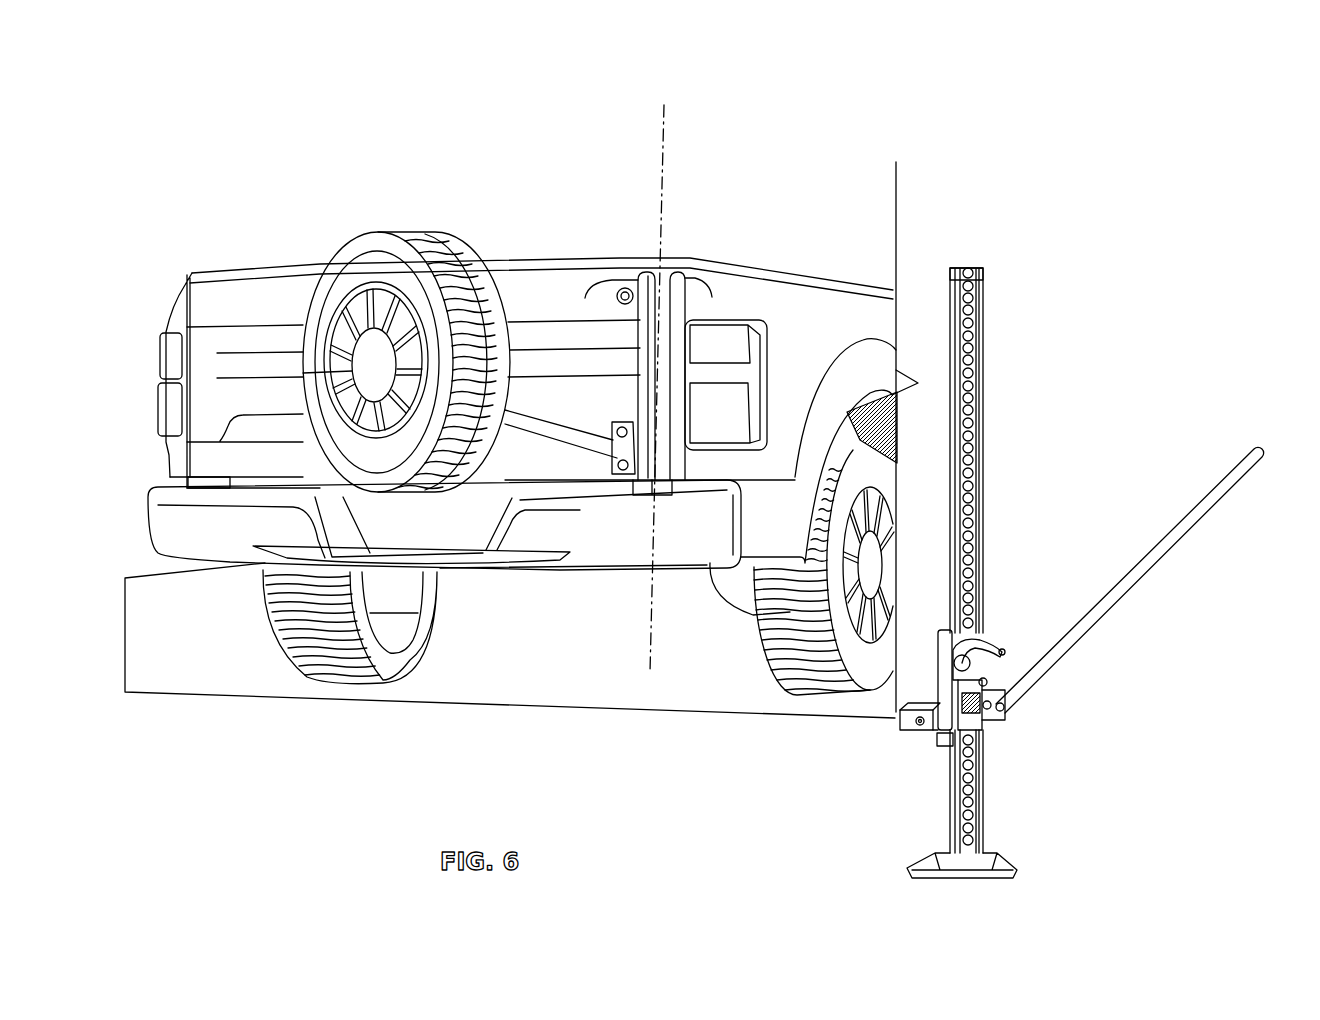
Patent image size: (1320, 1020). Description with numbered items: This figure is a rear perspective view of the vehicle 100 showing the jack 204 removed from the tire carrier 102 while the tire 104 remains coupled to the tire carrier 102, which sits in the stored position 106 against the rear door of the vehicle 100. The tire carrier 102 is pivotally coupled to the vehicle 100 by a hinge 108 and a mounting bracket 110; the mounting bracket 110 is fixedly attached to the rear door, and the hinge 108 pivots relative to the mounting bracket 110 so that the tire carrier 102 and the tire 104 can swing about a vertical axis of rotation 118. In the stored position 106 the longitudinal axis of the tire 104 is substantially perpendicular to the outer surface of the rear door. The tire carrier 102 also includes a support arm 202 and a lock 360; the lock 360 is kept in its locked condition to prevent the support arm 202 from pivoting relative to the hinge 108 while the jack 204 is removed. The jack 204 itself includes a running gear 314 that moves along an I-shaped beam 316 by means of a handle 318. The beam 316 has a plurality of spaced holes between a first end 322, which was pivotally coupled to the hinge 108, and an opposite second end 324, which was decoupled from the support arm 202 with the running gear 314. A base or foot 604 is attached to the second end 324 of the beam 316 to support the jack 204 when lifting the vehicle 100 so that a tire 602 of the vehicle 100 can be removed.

The vehicle 100 is at (220, 112).
The tire carrier 102 is at (405, 350).
The tire 104 is at (425, 236).
The stored position 106 is at (326, 256).
The hinge 108 is at (603, 295).
The mounting bracket 110 is at (707, 298).
The axis of rotation 118 is at (664, 118).
The support arm 202 is at (577, 441).
The jack 204 is at (1057, 557).
The running gear 314 is at (947, 692).
The beam 316 is at (985, 445).
The handle 318 is at (1130, 556).
The first end of the beam 322 is at (972, 265).
The second end of the beam 324 is at (985, 822).
The lock 360 is at (623, 415).
The tire 602 is at (795, 668).
The base or foot 604 is at (927, 867).